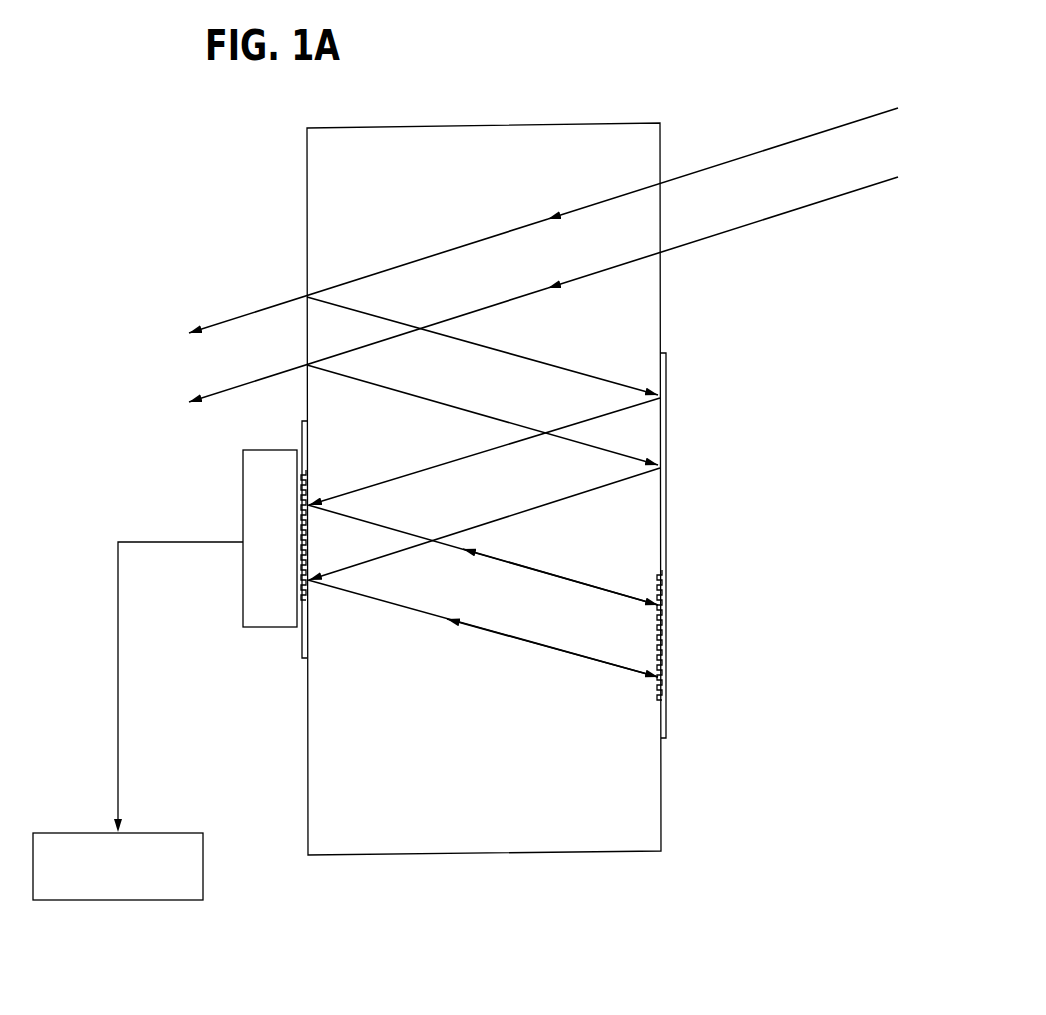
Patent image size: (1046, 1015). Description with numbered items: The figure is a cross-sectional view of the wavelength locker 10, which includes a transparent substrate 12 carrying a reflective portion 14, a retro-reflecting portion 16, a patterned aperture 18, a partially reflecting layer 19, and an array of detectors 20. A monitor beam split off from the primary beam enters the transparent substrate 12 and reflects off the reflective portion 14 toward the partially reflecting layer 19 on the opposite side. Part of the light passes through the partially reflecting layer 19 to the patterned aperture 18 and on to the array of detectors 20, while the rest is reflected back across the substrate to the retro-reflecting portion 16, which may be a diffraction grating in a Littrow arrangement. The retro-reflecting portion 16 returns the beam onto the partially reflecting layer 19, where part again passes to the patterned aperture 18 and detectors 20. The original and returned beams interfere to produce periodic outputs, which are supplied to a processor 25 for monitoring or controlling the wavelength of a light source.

The wavelength locker 10 is at (555, 82).
The transparent substrate 12 is at (661, 790).
The reflective portion 14 is at (666, 413).
The retro-reflecting portion 16 is at (665, 628).
The patterned aperture 18 is at (302, 656).
The partially reflecting layer 19 is at (300, 468).
The array of detectors 20 is at (251, 632).
The processor 25 is at (204, 862).